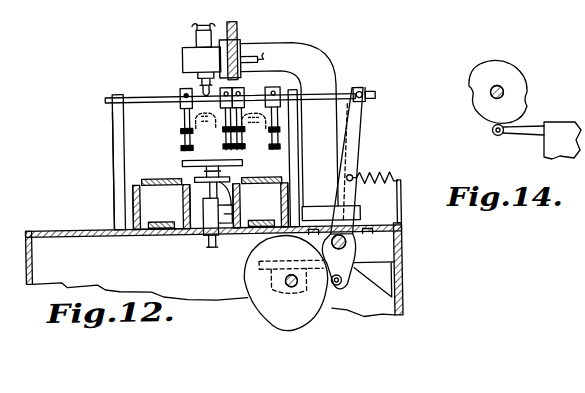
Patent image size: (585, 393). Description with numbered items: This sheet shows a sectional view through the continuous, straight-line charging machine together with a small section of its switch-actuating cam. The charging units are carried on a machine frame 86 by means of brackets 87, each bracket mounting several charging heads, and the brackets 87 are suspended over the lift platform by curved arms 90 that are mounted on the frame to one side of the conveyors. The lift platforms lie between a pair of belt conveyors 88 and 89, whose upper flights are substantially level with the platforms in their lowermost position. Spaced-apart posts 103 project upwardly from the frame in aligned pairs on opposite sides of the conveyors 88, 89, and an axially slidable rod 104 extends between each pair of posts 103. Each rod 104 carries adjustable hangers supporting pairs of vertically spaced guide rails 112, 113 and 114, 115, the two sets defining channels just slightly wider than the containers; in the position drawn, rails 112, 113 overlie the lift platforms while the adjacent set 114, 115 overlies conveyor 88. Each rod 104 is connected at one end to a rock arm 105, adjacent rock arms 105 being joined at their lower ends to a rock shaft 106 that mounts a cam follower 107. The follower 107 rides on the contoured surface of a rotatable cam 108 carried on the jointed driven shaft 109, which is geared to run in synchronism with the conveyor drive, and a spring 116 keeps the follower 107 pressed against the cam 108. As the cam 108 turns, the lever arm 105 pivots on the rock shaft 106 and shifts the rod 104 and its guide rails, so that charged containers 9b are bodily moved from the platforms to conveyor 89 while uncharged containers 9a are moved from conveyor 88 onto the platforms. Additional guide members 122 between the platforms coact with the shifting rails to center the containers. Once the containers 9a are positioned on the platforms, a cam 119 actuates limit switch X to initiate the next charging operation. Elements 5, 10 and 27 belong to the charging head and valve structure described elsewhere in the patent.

In FIG. 12, the valve 5 is at (204, 235).
In FIG. 12, the uncharged containers 9a is at (299, 115).
In FIG. 12, the charged containers 9b is at (183, 114).
In FIG. 12, the nozzle 10 is at (204, 90).
In FIG. 12, the head block 27 is at (185, 58).
In FIG. 12, the machine frame 86 is at (50, 228).
In FIG. 12, the brackets 87 is at (243, 30).
In FIG. 12, the belt conveyor 88 is at (261, 202).
In FIG. 12, the belt conveyor 89 is at (162, 204).
In FIG. 12, the curved arms 90 is at (330, 63).
In FIG. 12, the posts 103 is at (114, 128).
In FIG. 12, the axially slidable rod 104 is at (107, 99).
In FIG. 12, the rock arm 105 is at (358, 133).
In FIG. 12, the rock shaft 106 is at (347, 248).
In FIG. 12, the cam follower 107 is at (337, 289).
In FIG. 12, the contoured rotatable cam 108 is at (262, 322).
In FIG. 12, the jointed driven shaft 109 is at (284, 288).
In FIG. 12, the guide rail 112 is at (182, 137).
In FIG. 12, the guide rail 113 is at (218, 129).
In FIG. 12, the guide rail 114 is at (244, 131).
In FIG. 12, the guide rail 115 is at (281, 158).
In FIG. 12, the springs 116 is at (384, 178).
In FIG. 14, the cam 119 is at (505, 68).
In FIG. 12, the additional guide members 122 is at (183, 164).
In FIG. 14, the limit switch X is at (568, 124).